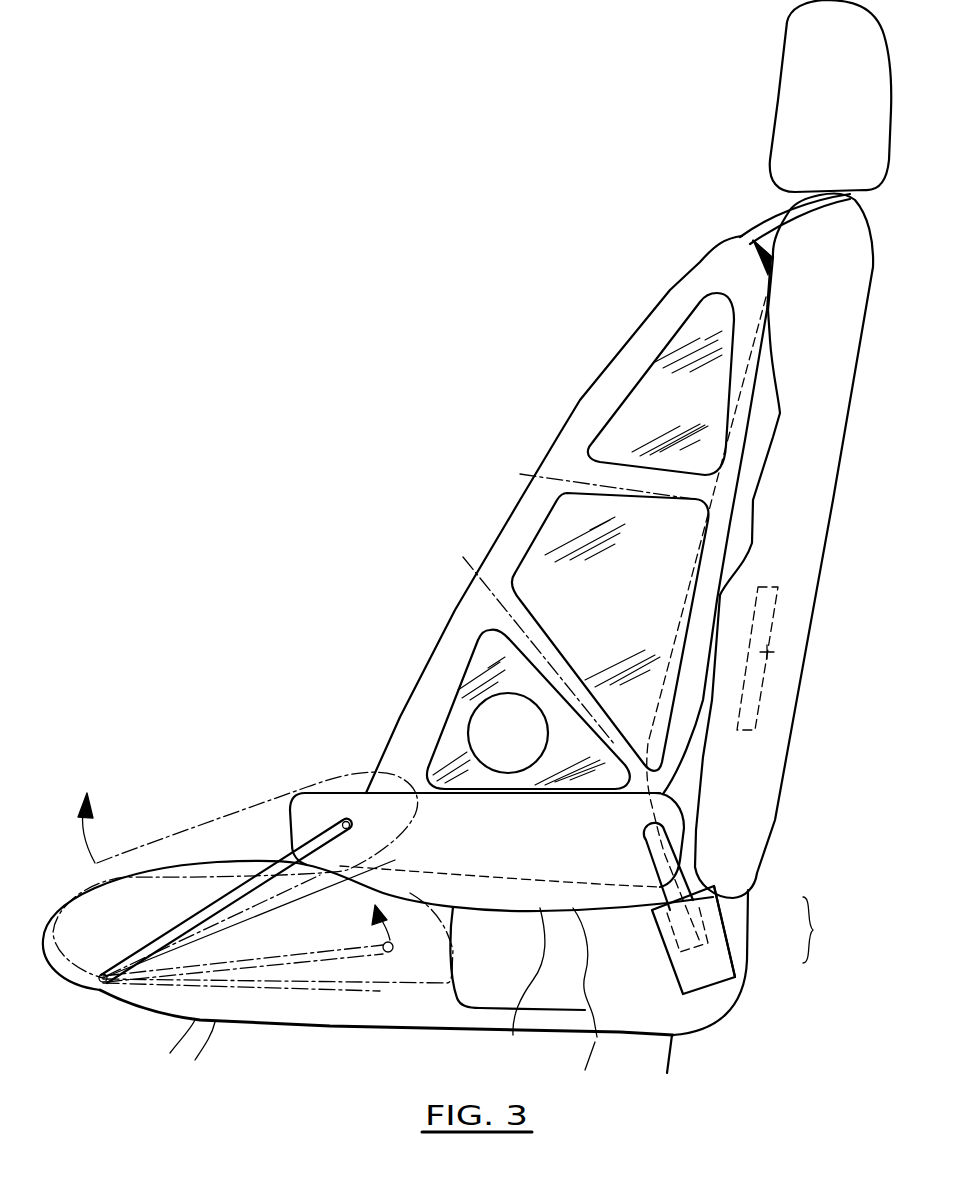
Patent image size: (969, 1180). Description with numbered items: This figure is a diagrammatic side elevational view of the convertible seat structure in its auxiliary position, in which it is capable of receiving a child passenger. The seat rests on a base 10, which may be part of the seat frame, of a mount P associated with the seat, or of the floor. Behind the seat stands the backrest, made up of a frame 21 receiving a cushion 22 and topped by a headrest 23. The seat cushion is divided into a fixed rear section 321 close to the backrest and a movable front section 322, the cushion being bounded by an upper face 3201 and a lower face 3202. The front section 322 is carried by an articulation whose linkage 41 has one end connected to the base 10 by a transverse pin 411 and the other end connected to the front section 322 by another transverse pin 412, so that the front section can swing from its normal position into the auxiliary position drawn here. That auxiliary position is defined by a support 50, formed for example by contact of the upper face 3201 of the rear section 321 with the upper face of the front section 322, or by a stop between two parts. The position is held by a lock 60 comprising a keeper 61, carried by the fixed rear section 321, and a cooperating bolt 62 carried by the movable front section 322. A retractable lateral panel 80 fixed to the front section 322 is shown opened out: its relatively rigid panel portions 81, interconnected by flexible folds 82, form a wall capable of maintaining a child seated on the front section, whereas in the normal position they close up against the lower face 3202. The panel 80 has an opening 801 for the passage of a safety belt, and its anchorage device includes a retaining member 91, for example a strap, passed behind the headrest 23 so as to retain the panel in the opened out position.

The headrest 23 is at (805, 93).
The retaining member 91 is at (763, 220).
The cushion 22 is at (750, 795).
The frame 21 is at (774, 651).
The panel portions 81 is at (552, 460).
The flexible folds 82 is at (520, 474).
The opening 801 is at (526, 747).
The front section 322 is at (511, 851).
The fixed rear section 321 is at (522, 967).
The lower face 3202 is at (330, 790).
The upper face 3201 is at (163, 863).
The base 10 is at (305, 1010).
The transverse pin 411 is at (104, 988).
The linkage 41 is at (343, 953).
The transverse pin 412 is at (396, 953).
The lateral panel 80 is at (263, 987).
The support 50 is at (670, 963).
The lock 60 is at (822, 930).
The keeper 61 is at (717, 970).
The bolt 62 is at (737, 915).
The mount P is at (643, 1053).